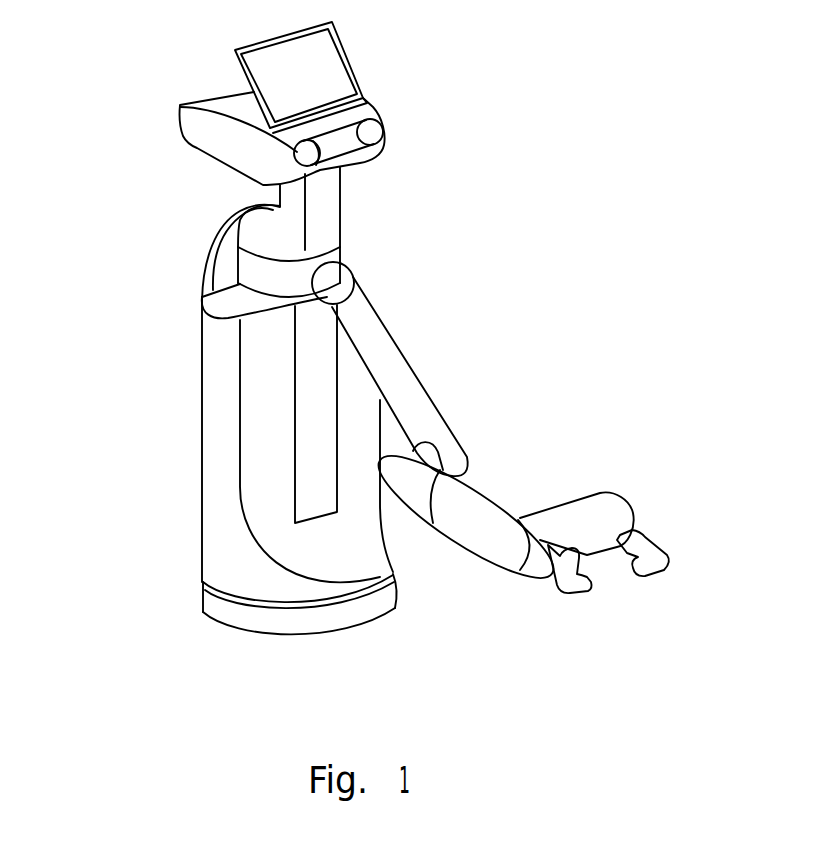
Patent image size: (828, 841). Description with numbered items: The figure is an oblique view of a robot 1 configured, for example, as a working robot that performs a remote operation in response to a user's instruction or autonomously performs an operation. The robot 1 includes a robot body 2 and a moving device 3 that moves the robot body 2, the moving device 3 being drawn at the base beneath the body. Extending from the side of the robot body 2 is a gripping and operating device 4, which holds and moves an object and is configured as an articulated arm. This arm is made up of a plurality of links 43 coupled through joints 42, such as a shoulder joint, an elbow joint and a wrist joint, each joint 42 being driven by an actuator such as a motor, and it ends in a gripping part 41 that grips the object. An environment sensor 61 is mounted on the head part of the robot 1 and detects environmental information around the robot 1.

The robot 1 is at (168, 278).
The robot body 2 is at (218, 365).
The moving device 3 is at (228, 605).
The gripping and operating device 4 is at (506, 453).
The gripping part 41 is at (613, 505).
The joint 42 is at (340, 283).
The link 43 is at (397, 347).
The environment sensor 61 is at (390, 125).